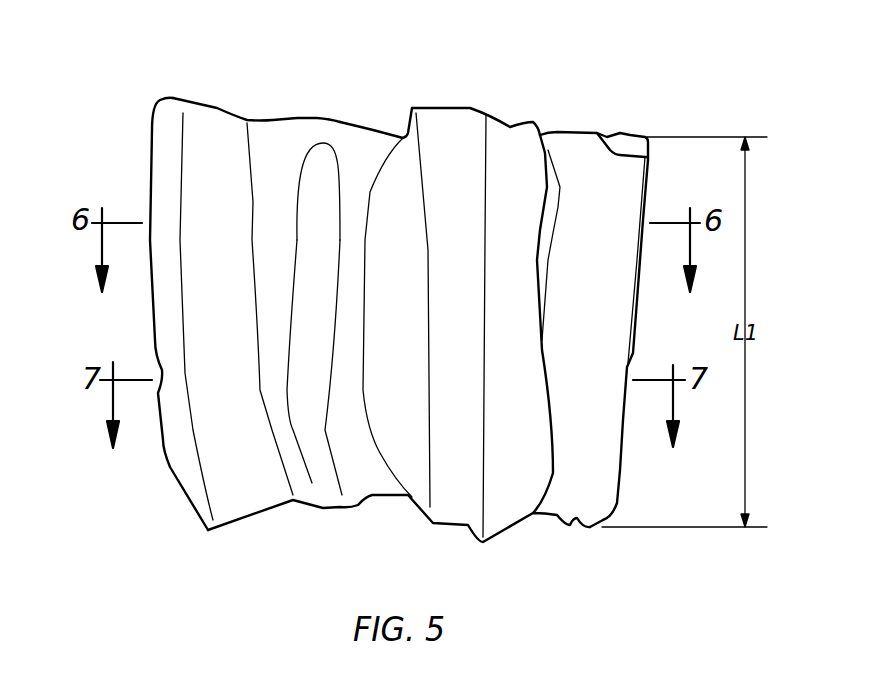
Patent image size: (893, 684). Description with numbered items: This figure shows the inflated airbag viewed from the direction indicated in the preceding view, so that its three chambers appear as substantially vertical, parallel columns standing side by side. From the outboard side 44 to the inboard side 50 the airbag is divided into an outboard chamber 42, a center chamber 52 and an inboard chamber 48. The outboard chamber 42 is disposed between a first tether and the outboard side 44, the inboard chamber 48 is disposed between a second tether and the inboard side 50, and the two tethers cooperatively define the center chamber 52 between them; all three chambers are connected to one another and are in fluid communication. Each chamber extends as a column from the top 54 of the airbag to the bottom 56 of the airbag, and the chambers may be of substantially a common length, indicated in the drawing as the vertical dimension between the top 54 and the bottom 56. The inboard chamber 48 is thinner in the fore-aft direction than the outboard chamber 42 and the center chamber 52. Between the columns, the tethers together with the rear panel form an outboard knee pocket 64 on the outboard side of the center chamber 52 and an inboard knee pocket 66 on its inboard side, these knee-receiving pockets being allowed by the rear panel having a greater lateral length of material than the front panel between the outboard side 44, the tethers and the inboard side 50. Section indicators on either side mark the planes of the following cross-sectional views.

The outboard chamber 42 is at (218, 108).
The outboard side 44 is at (152, 130).
The inboard chamber 48 is at (597, 130).
The inboard side 50 is at (623, 427).
The center chamber 52 is at (462, 103).
The top 54 is at (360, 123).
The bottom 56 is at (387, 497).
The outboard knee pocket 64 is at (323, 162).
The inboard knee pocket 66 is at (553, 175).